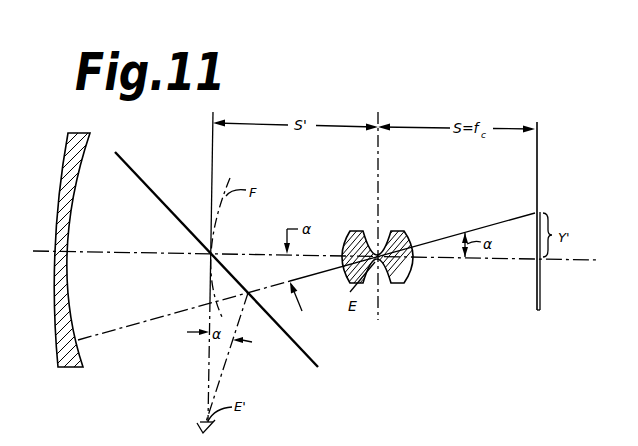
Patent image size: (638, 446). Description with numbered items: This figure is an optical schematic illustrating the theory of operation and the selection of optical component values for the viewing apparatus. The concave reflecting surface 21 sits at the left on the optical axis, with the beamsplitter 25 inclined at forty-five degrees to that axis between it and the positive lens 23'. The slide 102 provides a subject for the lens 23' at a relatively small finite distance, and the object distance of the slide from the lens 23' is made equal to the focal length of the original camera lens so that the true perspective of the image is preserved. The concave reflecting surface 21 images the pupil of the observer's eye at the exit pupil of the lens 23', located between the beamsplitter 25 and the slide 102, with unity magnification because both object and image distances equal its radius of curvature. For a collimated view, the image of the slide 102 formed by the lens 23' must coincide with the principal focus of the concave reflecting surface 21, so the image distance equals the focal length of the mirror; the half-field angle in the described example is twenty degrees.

The concave reflecting surface 21 is at (70, 313).
The beamsplitter 25 is at (148, 183).
The positive lens 23' is at (371, 216).
The slide 102 is at (541, 301).